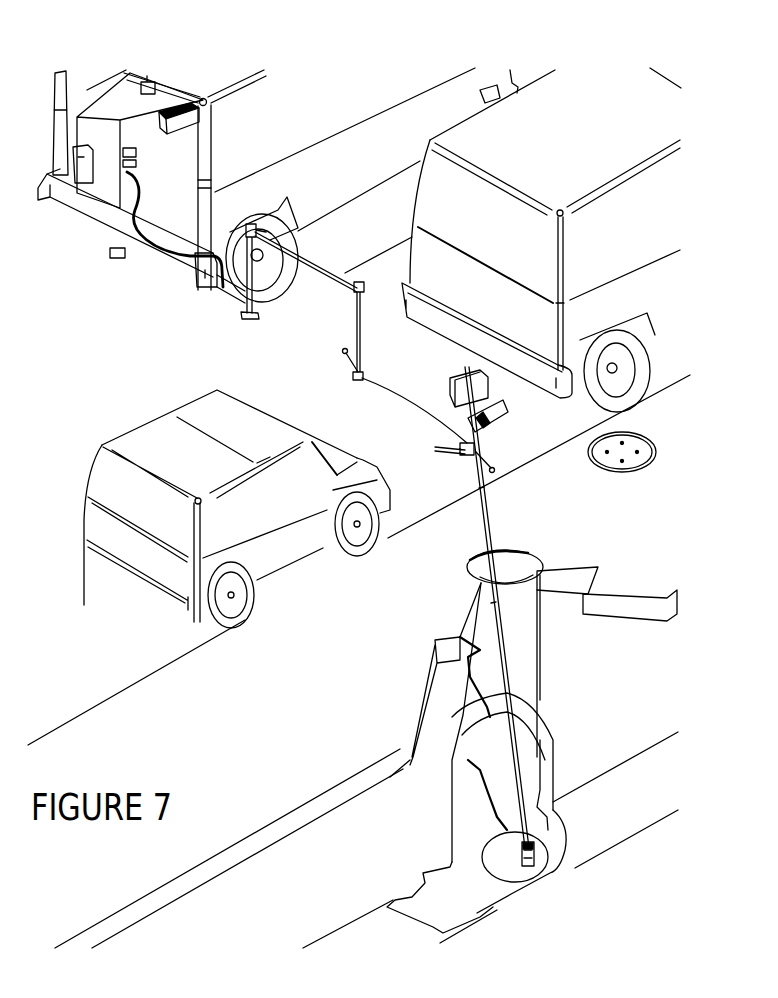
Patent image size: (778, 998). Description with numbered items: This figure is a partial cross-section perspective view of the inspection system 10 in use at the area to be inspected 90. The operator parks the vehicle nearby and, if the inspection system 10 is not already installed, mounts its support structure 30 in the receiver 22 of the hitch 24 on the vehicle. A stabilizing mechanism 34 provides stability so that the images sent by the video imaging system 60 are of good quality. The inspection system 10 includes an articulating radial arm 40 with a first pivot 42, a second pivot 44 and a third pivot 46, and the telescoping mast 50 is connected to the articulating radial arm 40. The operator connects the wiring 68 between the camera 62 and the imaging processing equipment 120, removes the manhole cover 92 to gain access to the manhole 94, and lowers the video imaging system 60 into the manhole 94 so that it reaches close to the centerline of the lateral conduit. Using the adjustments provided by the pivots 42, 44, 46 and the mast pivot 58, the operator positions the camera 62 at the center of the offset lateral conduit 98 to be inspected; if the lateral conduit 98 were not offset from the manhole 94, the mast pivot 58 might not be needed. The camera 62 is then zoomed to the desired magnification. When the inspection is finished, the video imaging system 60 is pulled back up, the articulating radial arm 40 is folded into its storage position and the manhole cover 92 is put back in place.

The inspection system 10 is at (503, 392).
The receiver 22 is at (205, 292).
The hitch 24 is at (198, 291).
The support structure 30 is at (245, 308).
The stabilizing mechanism 34 is at (247, 317).
The articulating radial arm 40 is at (418, 227).
The first pivot 42 is at (282, 260).
The second pivot 44 is at (347, 300).
The third pivot 46 is at (356, 378).
The telescoping mast 50 is at (483, 470).
The mast pivot 58 is at (453, 453).
The video imaging system 60 is at (537, 855).
The camera 62 is at (525, 865).
The wiring 68 is at (133, 213).
The area to be inspected 90 is at (462, 571).
The manhole cover 92 is at (652, 463).
The manhole 94 is at (480, 583).
The offset lateral conduit 98 is at (648, 828).
The imaging processing equipment 120 is at (127, 152).